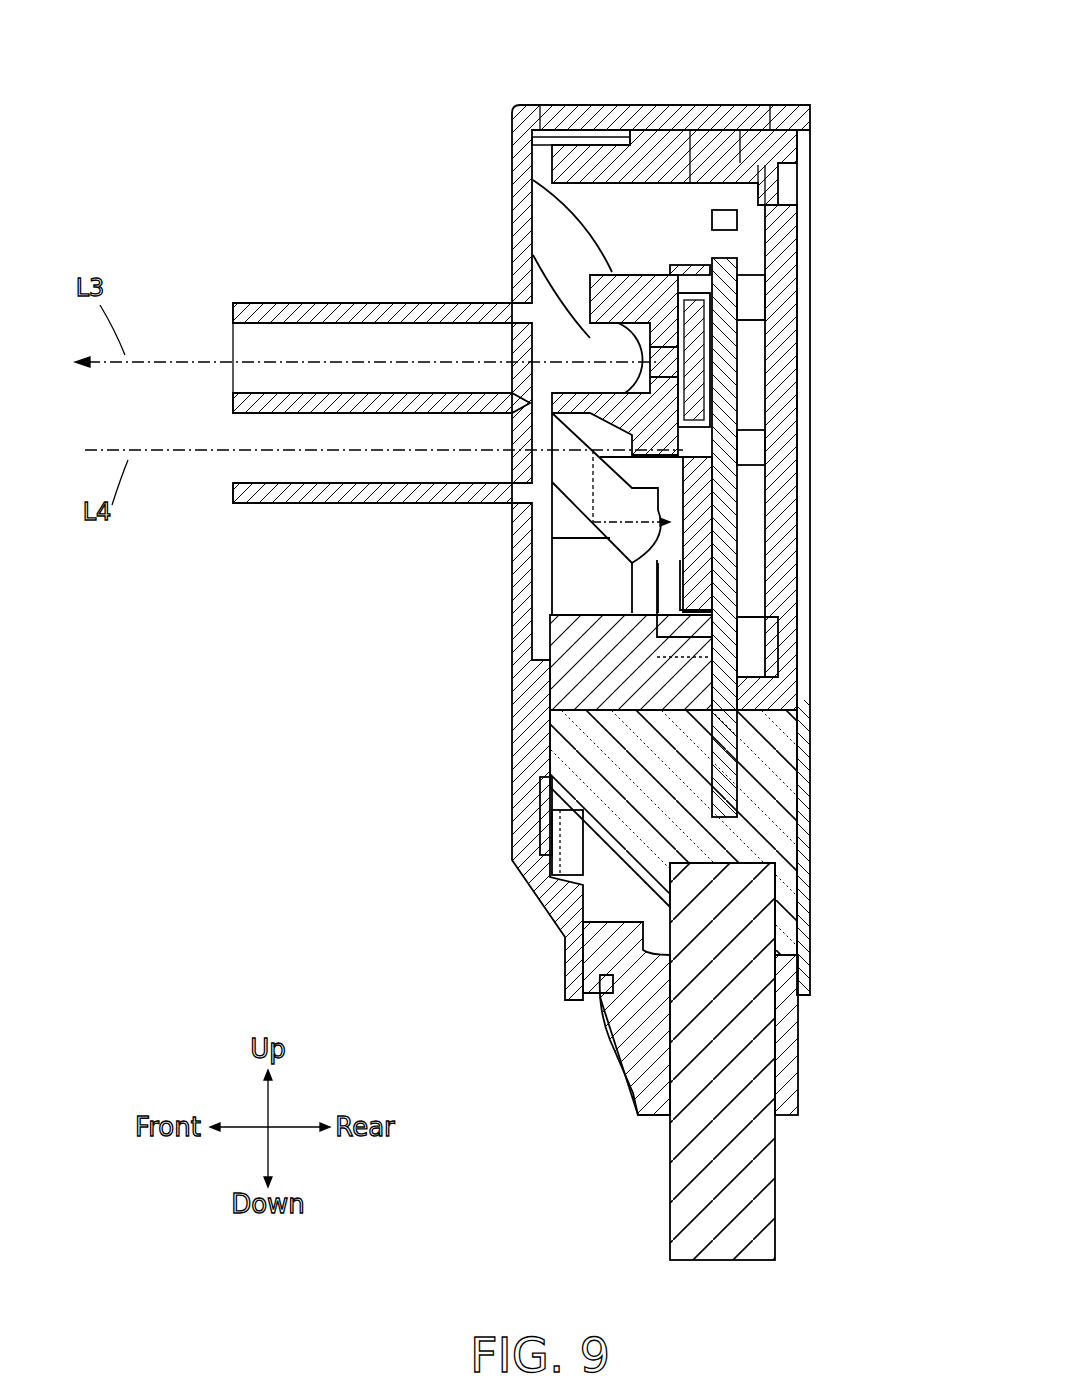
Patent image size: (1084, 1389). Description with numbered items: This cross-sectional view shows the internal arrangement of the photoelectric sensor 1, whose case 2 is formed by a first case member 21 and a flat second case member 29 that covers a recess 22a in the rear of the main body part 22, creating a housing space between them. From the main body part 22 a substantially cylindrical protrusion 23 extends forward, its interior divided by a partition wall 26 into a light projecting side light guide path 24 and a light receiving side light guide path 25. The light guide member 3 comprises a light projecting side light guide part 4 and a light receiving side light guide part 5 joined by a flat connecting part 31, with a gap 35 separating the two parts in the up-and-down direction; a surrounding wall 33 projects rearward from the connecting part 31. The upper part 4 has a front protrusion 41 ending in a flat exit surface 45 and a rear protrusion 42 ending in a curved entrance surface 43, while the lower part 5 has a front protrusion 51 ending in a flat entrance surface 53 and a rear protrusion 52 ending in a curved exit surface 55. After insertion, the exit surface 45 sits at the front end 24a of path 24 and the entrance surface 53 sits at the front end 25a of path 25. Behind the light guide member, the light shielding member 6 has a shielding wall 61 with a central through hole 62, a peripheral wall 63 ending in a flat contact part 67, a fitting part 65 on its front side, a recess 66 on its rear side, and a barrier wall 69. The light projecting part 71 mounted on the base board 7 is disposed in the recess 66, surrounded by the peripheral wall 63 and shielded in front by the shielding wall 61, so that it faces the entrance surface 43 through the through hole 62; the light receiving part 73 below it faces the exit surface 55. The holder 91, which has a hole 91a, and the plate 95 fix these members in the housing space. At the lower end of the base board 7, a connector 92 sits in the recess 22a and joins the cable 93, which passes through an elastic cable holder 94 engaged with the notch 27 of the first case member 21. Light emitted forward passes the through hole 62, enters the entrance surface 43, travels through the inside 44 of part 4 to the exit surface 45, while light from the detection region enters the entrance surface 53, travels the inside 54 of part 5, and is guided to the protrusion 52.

The photoelectric sensor 1 is at (244, 125).
The case 2 is at (812, 47).
The light guide member 3 is at (548, 690).
The light projecting side light guide part 4 is at (378, 315).
The light receiving side light guide part 5 is at (370, 505).
The light shielding member 6 is at (555, 215).
The base board 7 is at (714, 268).
The first case member 21 is at (782, 112).
The main body part 22 is at (535, 138).
The recess 22a is at (745, 140).
The protrusion 23 is at (270, 302).
The light projecting side light guide path 24 is at (330, 322).
The front end of light projecting side light guide path 24a is at (235, 305).
The light receiving side light guide path 25 is at (298, 492).
The front end of light receiving side light guide path 25a is at (238, 500).
The partition wall 26 is at (245, 411).
The notch 27 is at (608, 990).
The second case member 29 is at (790, 180).
The connecting part 31 is at (545, 105).
The surrounding wall 33 is at (596, 178).
The gap 35 is at (233, 398).
The protrusion 41 is at (452, 303).
The protrusion 42 is at (622, 350).
The entrance surface 43 is at (740, 395).
The inside of light projecting side light guide part 44 is at (435, 345).
The exit surface 45 is at (233, 338).
The protrusion 51 is at (580, 448).
The protrusion 52 is at (565, 600).
The entrance surface 53 is at (240, 466).
The inside of light receiving side light guide part 54 is at (410, 470).
The exit surface 55 is at (700, 540).
The shielding wall 61 is at (712, 330).
The through hole 62 is at (782, 362).
The peripheral wall 63 is at (768, 228).
The fitting part 65 is at (605, 300).
The recess 66 is at (752, 315).
The contact part 67 is at (752, 298).
The barrier wall 69 is at (640, 525).
The light projecting part 71 is at (708, 305).
The light receiving part 73 is at (760, 645).
The holder 91 is at (700, 150).
The hole 91a is at (642, 160).
The connector 92 is at (565, 905).
The cable 93 is at (670, 1200).
The cable holder 94 is at (612, 1062).
The plate 95 is at (762, 185).